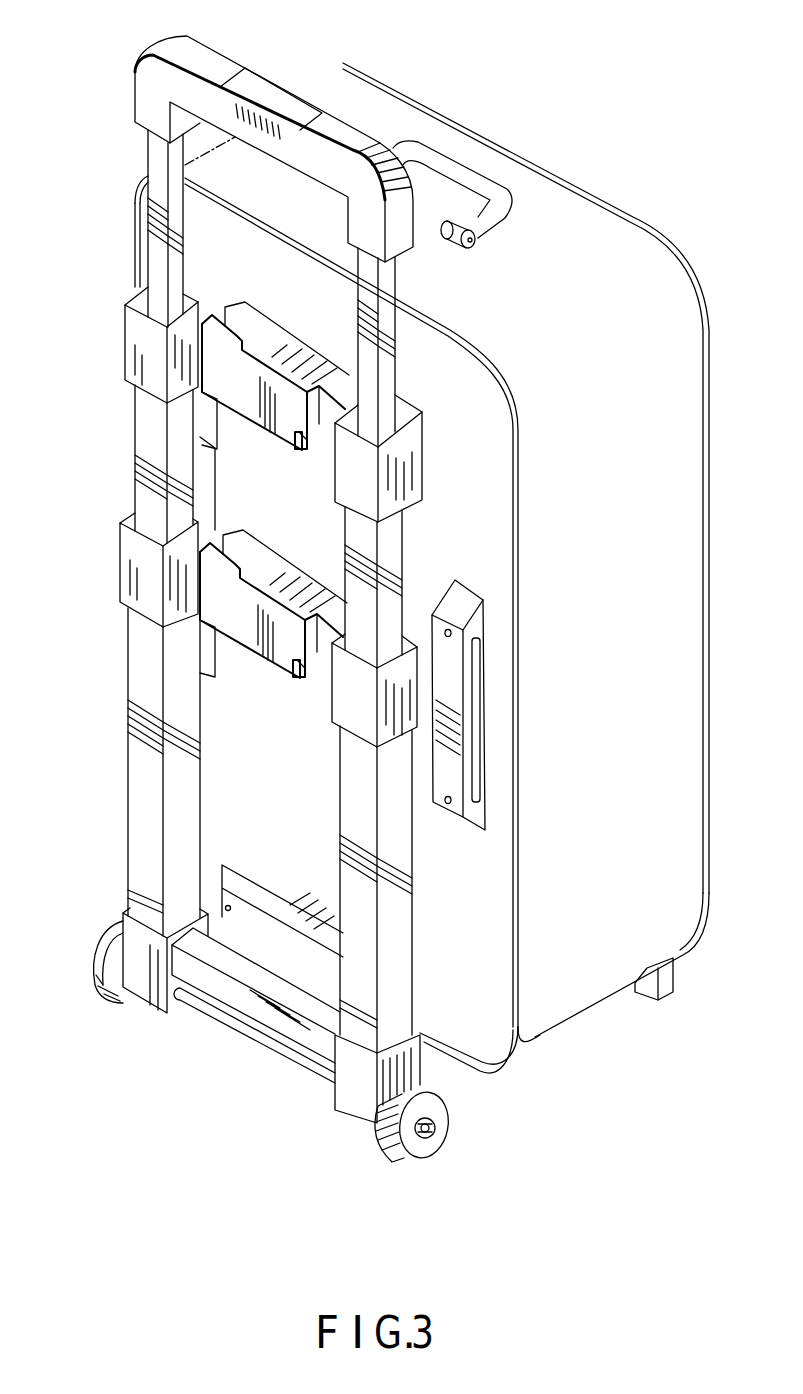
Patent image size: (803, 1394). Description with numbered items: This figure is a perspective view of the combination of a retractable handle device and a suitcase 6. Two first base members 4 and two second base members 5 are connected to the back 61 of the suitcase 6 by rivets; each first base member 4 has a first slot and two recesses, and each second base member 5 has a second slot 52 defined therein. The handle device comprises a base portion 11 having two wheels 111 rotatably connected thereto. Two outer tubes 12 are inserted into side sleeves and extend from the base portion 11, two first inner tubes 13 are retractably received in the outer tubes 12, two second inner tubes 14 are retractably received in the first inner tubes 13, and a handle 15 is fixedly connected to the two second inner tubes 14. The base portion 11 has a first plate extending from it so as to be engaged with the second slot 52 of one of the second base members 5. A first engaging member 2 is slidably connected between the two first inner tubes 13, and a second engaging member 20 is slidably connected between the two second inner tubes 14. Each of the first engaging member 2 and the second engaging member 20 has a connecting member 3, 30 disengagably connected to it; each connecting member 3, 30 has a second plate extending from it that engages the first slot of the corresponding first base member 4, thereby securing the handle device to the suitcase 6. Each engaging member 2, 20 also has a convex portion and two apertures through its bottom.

The suitcase 6 is at (305, 80).
The back of the suitcase 61 is at (488, 1043).
The handle 15 is at (145, 90).
The second inner tubes 14 is at (162, 237).
The second engaging member 20 is at (122, 350).
The first base members 4 is at (421, 411).
The first inner tubes 13 is at (143, 473).
The first engaging member 2 is at (132, 563).
The outer tubes 12 is at (145, 750).
The wheels 111 is at (115, 950).
The base portion 11 is at (238, 975).
The connecting member 30 is at (275, 327).
The connecting member 3 is at (267, 553).
The second base members 5 is at (467, 602).
The second slot 52 is at (474, 733).